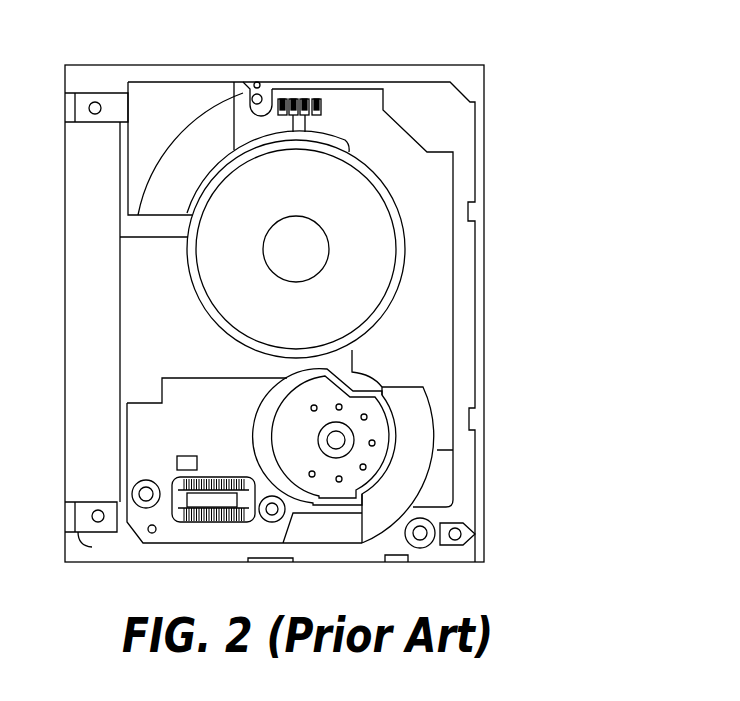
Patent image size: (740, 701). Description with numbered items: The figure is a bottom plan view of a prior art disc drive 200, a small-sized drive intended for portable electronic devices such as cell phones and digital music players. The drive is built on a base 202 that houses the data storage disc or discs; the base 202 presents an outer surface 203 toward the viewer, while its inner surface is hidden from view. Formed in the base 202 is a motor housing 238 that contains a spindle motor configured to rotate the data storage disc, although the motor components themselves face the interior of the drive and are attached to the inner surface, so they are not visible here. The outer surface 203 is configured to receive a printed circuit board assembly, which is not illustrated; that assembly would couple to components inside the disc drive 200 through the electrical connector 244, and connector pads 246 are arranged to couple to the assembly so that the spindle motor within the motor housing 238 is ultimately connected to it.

The disc drive 200 is at (548, 77).
The base 202 is at (480, 350).
The outer surface 203 is at (400, 152).
The motor housing 238 is at (372, 242).
The electrical connector 244 is at (183, 522).
The connector pads 246 is at (302, 96).